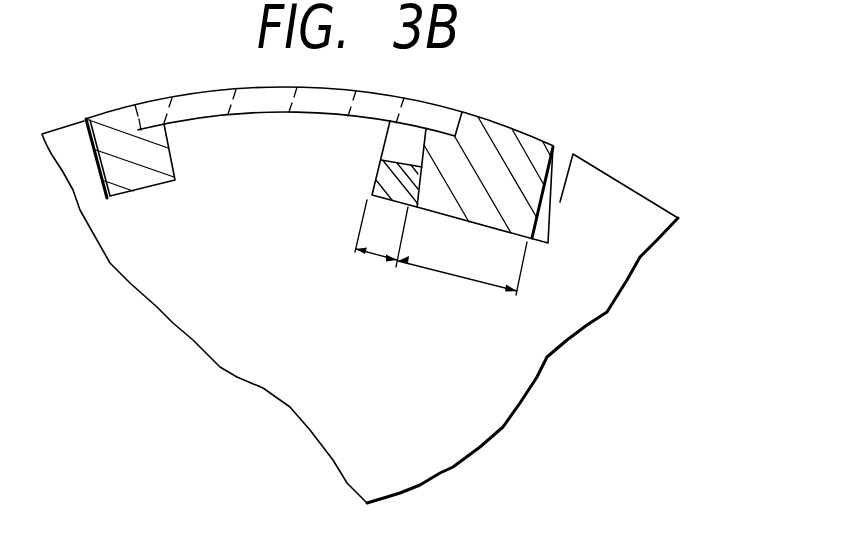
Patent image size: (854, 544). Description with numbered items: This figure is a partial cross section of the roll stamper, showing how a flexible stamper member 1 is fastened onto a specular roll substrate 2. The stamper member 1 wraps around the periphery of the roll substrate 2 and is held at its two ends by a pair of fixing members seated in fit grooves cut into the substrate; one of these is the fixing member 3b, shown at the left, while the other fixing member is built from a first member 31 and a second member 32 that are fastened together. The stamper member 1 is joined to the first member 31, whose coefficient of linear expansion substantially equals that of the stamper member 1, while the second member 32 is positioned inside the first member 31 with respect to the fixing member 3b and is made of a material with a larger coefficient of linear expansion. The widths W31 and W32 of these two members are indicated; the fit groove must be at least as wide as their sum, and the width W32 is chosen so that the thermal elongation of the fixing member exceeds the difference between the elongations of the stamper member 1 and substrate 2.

The flexible stamper member 1 is at (276, 104).
The roll substrate 2 is at (239, 348).
The fixing member 3b is at (155, 185).
The first member 31 is at (514, 207).
The second member 32 is at (387, 186).
The width of the first member W31 is at (462, 266).
The width of the second member W32 is at (384, 247).